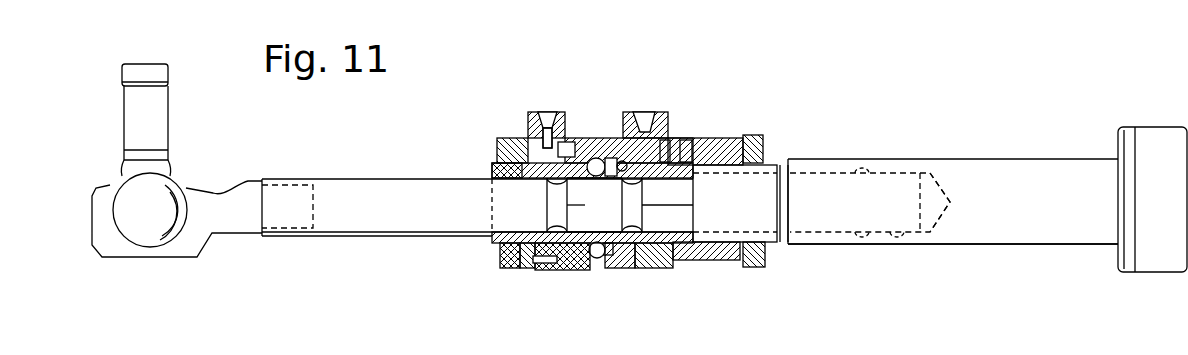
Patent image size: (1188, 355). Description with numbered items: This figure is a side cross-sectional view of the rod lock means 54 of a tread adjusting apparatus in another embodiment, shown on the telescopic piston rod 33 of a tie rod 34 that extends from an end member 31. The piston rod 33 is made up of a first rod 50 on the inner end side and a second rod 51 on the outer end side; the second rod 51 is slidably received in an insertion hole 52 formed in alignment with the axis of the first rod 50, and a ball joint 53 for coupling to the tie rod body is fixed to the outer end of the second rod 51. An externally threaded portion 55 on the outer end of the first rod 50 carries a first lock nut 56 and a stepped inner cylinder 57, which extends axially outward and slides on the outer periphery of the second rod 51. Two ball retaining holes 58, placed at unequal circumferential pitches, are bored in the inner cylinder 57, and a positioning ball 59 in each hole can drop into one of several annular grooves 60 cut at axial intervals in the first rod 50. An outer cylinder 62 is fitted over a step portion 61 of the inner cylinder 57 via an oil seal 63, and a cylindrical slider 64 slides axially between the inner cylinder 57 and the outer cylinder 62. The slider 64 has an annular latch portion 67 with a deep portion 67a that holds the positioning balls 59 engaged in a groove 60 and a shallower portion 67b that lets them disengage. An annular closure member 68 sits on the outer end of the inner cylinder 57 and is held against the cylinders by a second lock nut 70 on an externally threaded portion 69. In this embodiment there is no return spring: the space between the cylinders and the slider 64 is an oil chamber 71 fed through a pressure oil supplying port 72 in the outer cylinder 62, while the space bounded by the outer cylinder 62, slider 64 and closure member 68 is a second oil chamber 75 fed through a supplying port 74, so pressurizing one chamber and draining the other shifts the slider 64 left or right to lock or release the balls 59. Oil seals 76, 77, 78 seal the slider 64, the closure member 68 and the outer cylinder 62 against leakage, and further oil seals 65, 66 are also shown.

The housing end 31 is at (1152, 138).
The piston rod 33 is at (1018, 165).
The tie rod 34 is at (950, 158).
The first rod 50 is at (1032, 237).
The second rod 51 is at (427, 232).
The insertion hole 52 is at (900, 235).
The ball joint 53 is at (168, 206).
The rod lock means 54 is at (577, 125).
The externally threaded portion 55 is at (725, 162).
The first lock nut 56 is at (763, 150).
The inner cylinder 57 is at (695, 163).
The ball retaining hole 58 is at (622, 158).
The positioning ball 59 is at (608, 156).
The annular groove 60 is at (549, 201).
The step portion 61 is at (690, 150).
The outer cylinder 62 is at (598, 158).
The oil seal 63 is at (665, 150).
The cylindrical slider 64 is at (570, 262).
The oil seal 65 is at (614, 262).
The oil seal 66 is at (635, 262).
The annular latch portion 67 is at (680, 202).
The latch portion depth 67a is at (597, 215).
The latch portion depth 67b is at (667, 215).
The annular closure member 68 is at (520, 140).
The externally threaded portion 69 is at (493, 150).
The second lock nut 70 is at (518, 160).
The oil chamber 71 is at (655, 270).
The pressure oil supplying port 72 is at (655, 126).
The pressure oil supplying port 74 is at (552, 130).
The oil chamber 75 is at (542, 148).
The oil seal 76 is at (535, 268).
The oil seal 77 is at (530, 257).
The oil seal 78 is at (500, 250).